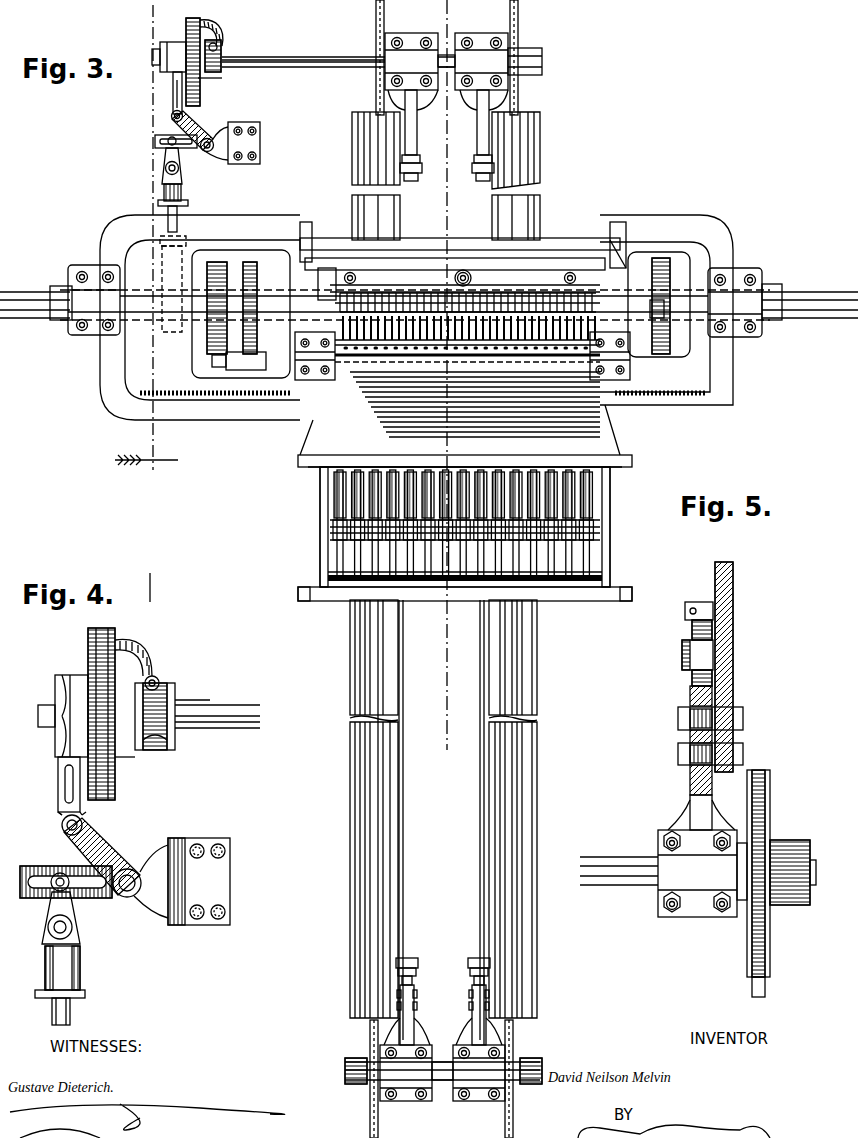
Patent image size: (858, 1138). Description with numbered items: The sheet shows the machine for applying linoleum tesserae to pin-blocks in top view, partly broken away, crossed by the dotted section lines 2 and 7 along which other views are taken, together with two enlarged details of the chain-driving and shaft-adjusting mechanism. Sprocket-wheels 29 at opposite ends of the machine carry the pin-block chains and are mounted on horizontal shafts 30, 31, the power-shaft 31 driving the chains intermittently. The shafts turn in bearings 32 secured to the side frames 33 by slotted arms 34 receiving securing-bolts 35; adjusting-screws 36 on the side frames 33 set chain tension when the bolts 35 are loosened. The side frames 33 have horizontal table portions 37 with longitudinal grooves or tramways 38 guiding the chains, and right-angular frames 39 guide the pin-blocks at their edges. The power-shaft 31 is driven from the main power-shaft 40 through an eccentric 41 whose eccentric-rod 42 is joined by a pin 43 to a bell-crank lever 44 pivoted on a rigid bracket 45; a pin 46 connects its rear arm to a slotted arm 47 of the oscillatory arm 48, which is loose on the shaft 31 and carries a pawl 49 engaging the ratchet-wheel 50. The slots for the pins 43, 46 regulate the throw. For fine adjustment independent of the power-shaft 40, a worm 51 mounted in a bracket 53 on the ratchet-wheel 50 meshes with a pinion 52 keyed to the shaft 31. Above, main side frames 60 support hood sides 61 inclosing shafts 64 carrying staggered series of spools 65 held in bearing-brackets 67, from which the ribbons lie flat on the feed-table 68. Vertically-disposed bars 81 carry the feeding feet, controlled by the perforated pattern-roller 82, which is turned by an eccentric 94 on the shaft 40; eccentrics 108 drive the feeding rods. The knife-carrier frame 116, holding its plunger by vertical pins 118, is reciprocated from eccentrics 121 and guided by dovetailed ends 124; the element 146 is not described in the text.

In FIG. 3, the section line 2 2 is at (146, 236).
In FIG. 4, the section line 2 2 is at (157, 587).
In FIG. 3, the section line 7 7 is at (450, 375).
In FIG. 3, the sprocket-wheels 29 is at (524, 1112).
In FIG. 5, the sprocket-wheels 29 is at (770, 950).
In FIG. 3, the horizontal shaft 30 is at (446, 1084).
In FIG. 5, the horizontal shaft 30 is at (608, 862).
In FIG. 3, the power-shaft 31 is at (338, 73).
In FIG. 4, the power-shaft 31 is at (230, 706).
In FIG. 3, the bearings 32 is at (410, 30).
In FIG. 5, the bearings 32 is at (696, 908).
In FIG. 3, the side frames 33 is at (400, 935).
In FIG. 5, the side frames 33 is at (729, 675).
In FIG. 3, the arms 34 is at (412, 126).
In FIG. 5, the arms 34 is at (688, 781).
In FIG. 3, the securing-bolts 35 is at (470, 988).
In FIG. 5, the securing-bolts 35 is at (738, 722).
In FIG. 3, the adjusting-screws 36 is at (412, 176).
In FIG. 5, the adjusting-screws 36 is at (685, 628).
In FIG. 3, the horizontal table portions 37 is at (398, 888).
In FIG. 3, the longitudinal grooves or tramways 38 is at (372, 832).
In FIG. 3, the right-angular frames 39 is at (350, 970).
In FIG. 3, the main power-shaft 40 is at (30, 292).
In FIG. 3, the eccentric 41 is at (174, 330).
In FIG. 3, the eccentric-rod 42 is at (178, 204).
In FIG. 4, the eccentric-rod 42 is at (72, 1008).
In FIG. 3, the pin 43 is at (158, 134).
In FIG. 4, the pin 43 is at (68, 890).
In FIG. 3, the bell-crank lever 44 is at (200, 128).
In FIG. 4, the bell-crank lever 44 is at (128, 862).
In FIG. 3, the rigid bracket 45 is at (222, 152).
In FIG. 4, the rigid bracket 45 is at (208, 840).
In FIG. 3, the pin 46 is at (171, 114).
In FIG. 4, the pin 46 is at (60, 830).
In FIG. 3, the slotted arm 47 is at (173, 88).
In FIG. 4, the slotted arm 47 is at (56, 786).
In FIG. 3, the oscillatory arm 48 is at (172, 54).
In FIG. 4, the oscillatory arm 48 is at (58, 716).
In FIG. 3, the pawl 49 is at (200, 80).
In FIG. 4, the pawl 49 is at (105, 752).
In FIG. 3, the ratchet-wheel 50 is at (200, 27).
In FIG. 4, the ratchet-wheel 50 is at (108, 628).
In FIG. 3, the worm 51 is at (218, 45).
In FIG. 4, the worm 51 is at (158, 678).
In FIG. 3, the pinion 52 is at (228, 55).
In FIG. 4, the pinion 52 is at (155, 750).
In FIG. 3, the bracket 53 is at (218, 36).
In FIG. 4, the bracket 53 is at (146, 656).
In FIG. 3, the main side frames 60 is at (305, 436).
In FIG. 3, the sides of inclosing frame 61 is at (461, 527).
In FIG. 3, the shafts 64 is at (342, 528).
In FIG. 3, the spools 65 is at (340, 562).
In FIG. 3, the bearing-brackets 67 is at (335, 494).
In FIG. 3, the feed-table 68 is at (420, 432).
In FIG. 3, the vertically-disposed bars 81 is at (396, 296).
In FIG. 3, the pattern-roller 82 is at (372, 372).
In FIG. 3, the eccentric 94 is at (218, 262).
In FIG. 3, the eccentrics 108 is at (250, 262).
In FIG. 3, the frame 116 is at (392, 282).
In FIG. 3, the vertical pins 118 is at (478, 258).
In FIG. 3, the eccentrics 121 is at (304, 334).
In FIG. 3, the dovetailed ends 124 is at (308, 228).
In FIG. 3, the block 146 is at (318, 283).